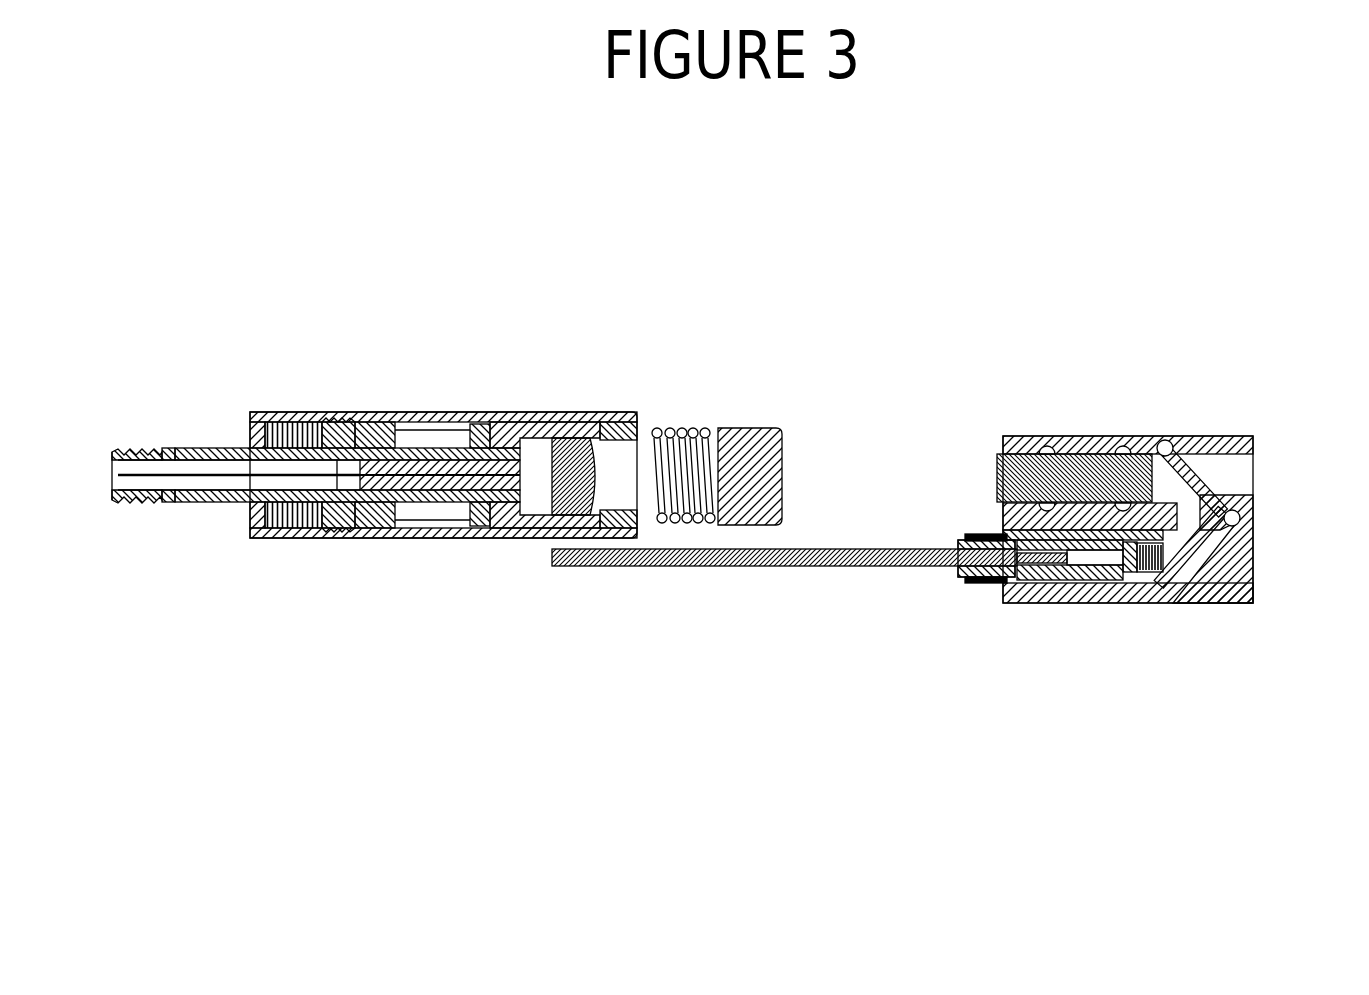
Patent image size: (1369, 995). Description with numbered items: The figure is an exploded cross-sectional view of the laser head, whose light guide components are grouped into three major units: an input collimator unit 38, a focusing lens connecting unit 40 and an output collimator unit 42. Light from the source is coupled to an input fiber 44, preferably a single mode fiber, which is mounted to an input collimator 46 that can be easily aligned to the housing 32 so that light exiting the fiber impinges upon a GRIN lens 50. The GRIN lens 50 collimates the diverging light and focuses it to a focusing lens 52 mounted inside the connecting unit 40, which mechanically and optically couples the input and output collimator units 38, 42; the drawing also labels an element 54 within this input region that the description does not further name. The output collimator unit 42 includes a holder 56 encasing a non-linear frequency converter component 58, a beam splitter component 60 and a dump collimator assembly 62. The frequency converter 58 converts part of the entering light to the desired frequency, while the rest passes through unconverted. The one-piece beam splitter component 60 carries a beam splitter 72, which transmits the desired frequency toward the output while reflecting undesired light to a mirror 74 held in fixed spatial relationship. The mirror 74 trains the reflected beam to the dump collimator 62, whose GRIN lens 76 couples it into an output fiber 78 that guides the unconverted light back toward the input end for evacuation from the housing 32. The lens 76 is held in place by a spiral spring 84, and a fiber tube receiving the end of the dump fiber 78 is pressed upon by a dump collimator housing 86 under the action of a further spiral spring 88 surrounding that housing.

The housing 32 is at (548, 412).
The input collimator unit 38 is at (345, 541).
The focusing lens connecting unit 40 is at (697, 428).
The output collimator unit 42 is at (1075, 610).
The input fiber 44 is at (216, 470).
The input collimator 46 is at (192, 503).
The GRIN lens 50 is at (563, 470).
The focusing lens 52 is at (762, 428).
The inner rod 54 is at (488, 483).
The holder 56 is at (1142, 436).
The non-linear frequency converter component 58 is at (1040, 465).
The beam splitter component 60 is at (1232, 512).
The dump collimator assembly 62 is at (1022, 608).
The beam splitter 72 is at (1178, 450).
The mirror 74 is at (1190, 575).
The GRIN lens 76 is at (1131, 585).
The output fiber 78 is at (862, 572).
The spiral spring 84 is at (1162, 590).
The dump collimator housing 86 is at (1057, 535).
The further spiral spring 88 is at (973, 530).